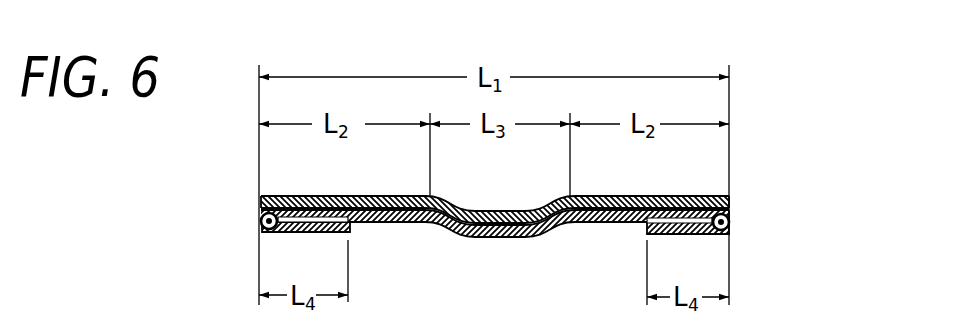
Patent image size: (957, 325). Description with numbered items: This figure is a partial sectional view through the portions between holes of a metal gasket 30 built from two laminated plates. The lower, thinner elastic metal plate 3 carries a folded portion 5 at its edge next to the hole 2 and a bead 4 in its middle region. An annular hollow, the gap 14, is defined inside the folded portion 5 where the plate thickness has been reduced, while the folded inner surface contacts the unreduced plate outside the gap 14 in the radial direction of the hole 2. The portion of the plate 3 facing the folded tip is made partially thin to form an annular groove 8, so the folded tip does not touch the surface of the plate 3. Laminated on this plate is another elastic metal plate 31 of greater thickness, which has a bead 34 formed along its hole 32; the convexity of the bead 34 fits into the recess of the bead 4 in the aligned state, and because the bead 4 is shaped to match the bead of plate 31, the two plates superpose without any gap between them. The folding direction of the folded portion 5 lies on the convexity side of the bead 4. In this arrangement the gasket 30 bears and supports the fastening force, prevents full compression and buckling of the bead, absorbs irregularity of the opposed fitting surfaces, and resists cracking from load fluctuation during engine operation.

The metal gasket 30 is at (488, 235).
The elastic metal plate 31 is at (487, 184).
The hole 32 is at (262, 200).
The bead 34 is at (527, 200).
The elastic metal plate 3 is at (495, 254).
The bead 4 is at (510, 238).
The hole 2 is at (488, 240).
The annular groove 8 is at (352, 232).
The gap 14 is at (262, 224).
The folded portion 5 is at (300, 234).